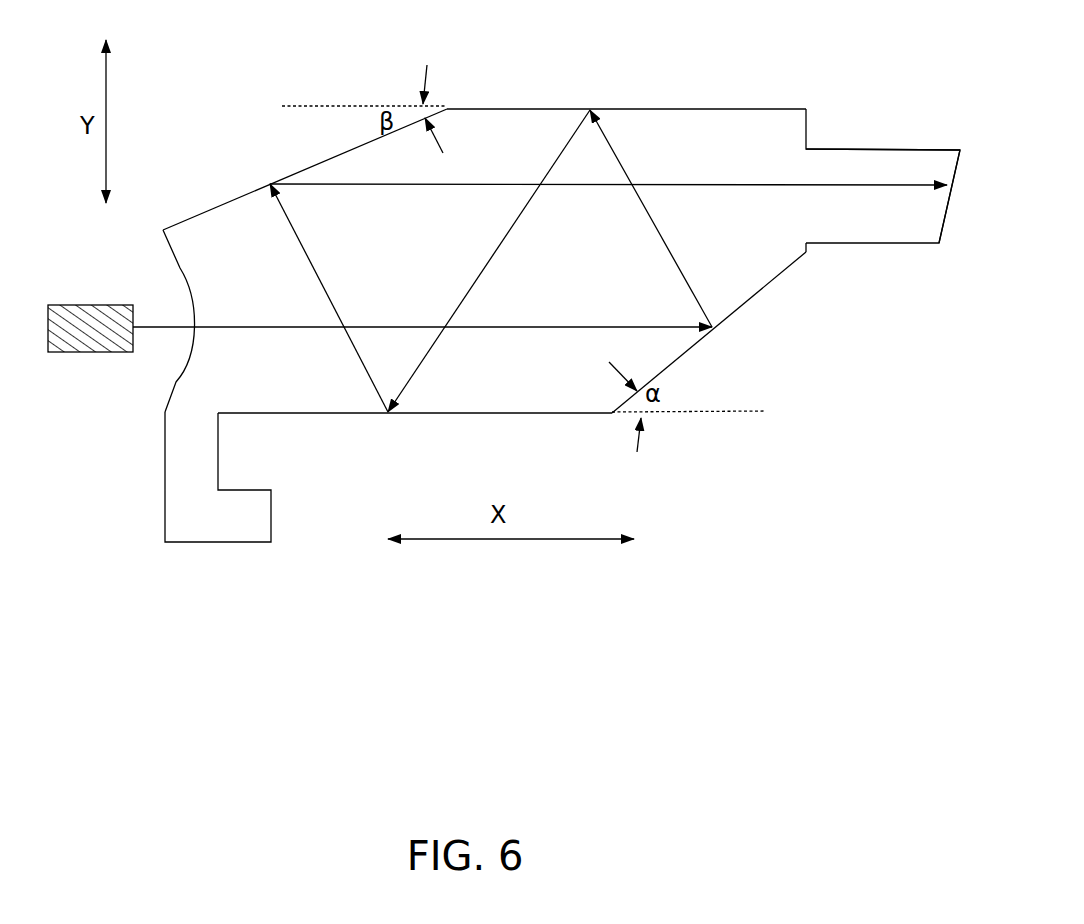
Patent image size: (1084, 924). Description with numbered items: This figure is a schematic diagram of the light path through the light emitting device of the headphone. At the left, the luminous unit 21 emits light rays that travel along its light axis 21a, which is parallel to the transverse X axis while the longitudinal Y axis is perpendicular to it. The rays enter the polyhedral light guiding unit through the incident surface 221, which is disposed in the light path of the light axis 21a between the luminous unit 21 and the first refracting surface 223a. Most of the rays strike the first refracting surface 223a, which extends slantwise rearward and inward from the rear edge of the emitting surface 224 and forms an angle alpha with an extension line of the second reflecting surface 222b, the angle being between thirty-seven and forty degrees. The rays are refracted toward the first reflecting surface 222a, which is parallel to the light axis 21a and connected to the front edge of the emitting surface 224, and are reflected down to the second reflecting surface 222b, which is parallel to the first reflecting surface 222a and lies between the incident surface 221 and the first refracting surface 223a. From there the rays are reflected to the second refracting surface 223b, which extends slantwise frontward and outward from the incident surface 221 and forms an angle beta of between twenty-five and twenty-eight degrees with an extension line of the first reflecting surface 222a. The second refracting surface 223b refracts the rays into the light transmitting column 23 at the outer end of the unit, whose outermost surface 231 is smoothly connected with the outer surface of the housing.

The luminous unit 21 is at (85, 310).
The light axis 21a is at (176, 328).
The incident surface 221 is at (185, 272).
The first reflecting surface 222a is at (625, 109).
The second reflecting surface 222b is at (445, 414).
The first refracting surface 223a is at (775, 278).
The second refracting surface 223b is at (225, 205).
The emitting surface 224 is at (808, 126).
The light transmitting column 23 is at (935, 150).
The outermost surface 231 is at (940, 238).